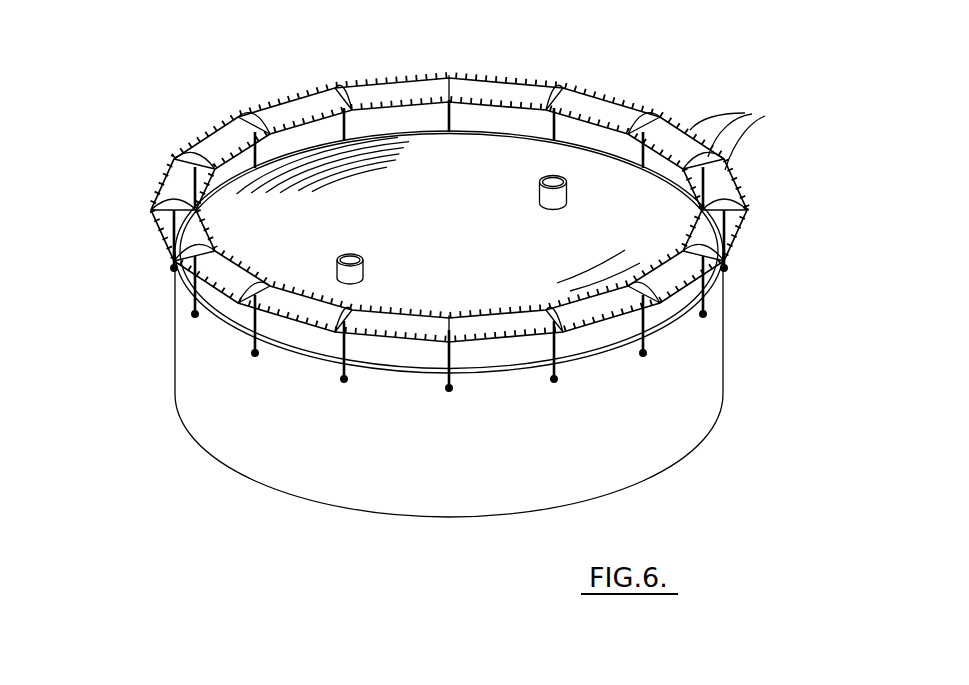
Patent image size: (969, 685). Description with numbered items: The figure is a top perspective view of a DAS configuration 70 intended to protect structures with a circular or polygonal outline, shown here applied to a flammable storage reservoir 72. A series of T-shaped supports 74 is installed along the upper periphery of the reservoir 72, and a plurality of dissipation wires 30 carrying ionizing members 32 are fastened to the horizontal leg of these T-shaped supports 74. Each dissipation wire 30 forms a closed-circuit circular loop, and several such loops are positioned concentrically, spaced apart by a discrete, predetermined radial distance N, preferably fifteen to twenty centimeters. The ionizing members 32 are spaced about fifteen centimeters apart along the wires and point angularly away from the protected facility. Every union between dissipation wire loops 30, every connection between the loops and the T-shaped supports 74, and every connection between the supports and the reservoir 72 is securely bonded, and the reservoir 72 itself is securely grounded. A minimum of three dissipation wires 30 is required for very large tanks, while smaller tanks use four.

The dissipation wire 30 is at (227, 122).
The ionizing member 32 is at (603, 96).
The DAS configuration 70 is at (762, 241).
The flammable storage reservoir 72 is at (447, 465).
The T-shaped support 74 is at (243, 333).
The radial distance N is at (745, 113).